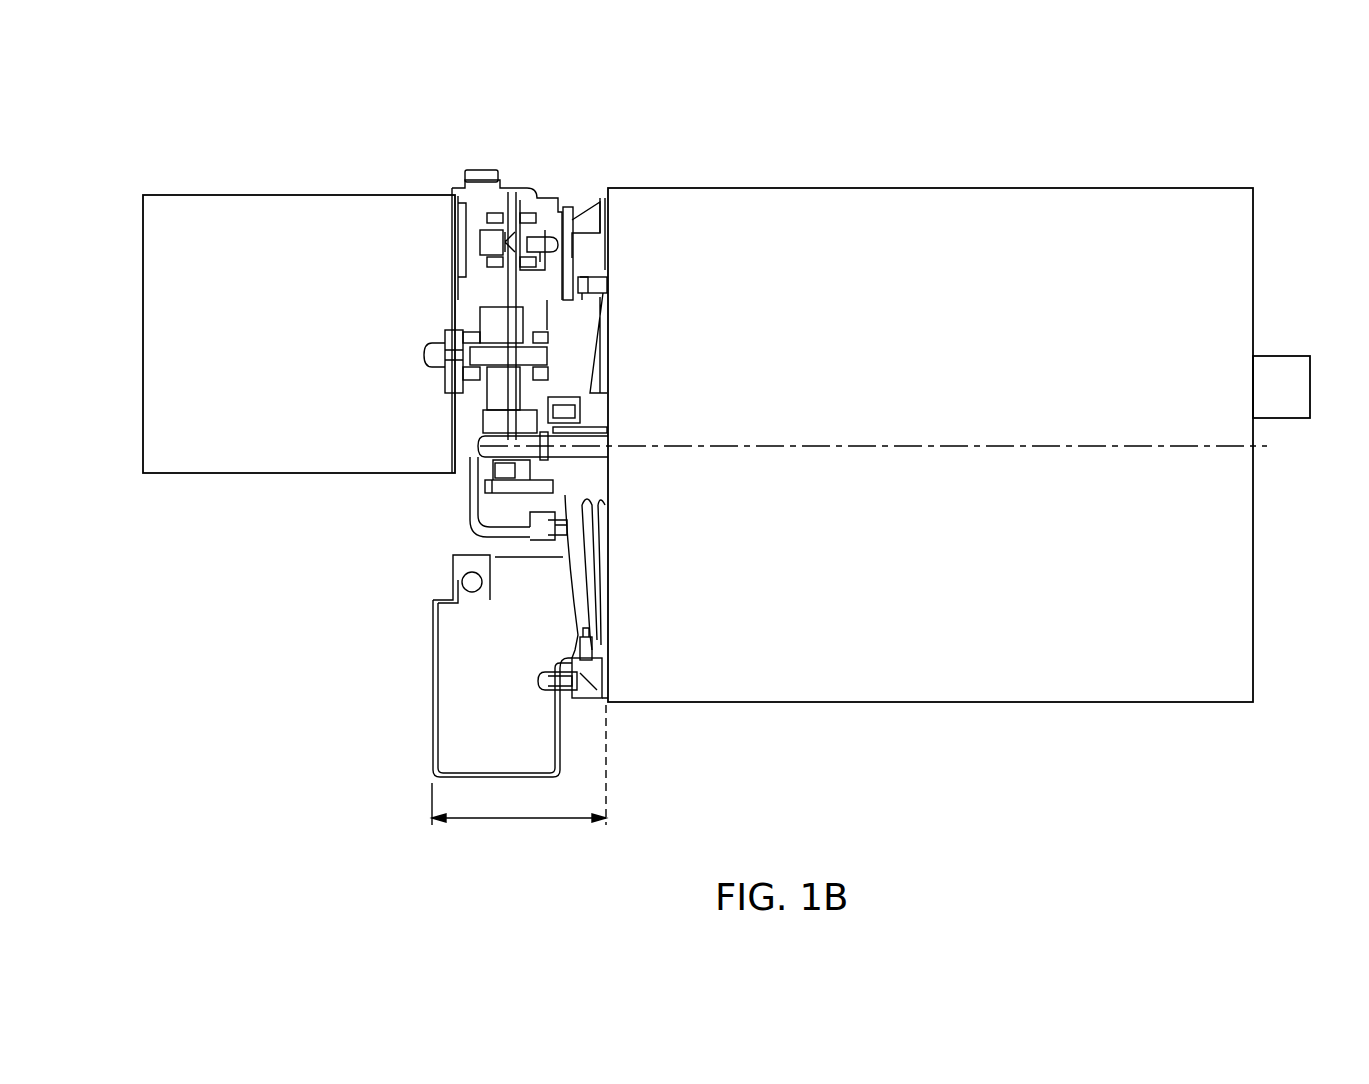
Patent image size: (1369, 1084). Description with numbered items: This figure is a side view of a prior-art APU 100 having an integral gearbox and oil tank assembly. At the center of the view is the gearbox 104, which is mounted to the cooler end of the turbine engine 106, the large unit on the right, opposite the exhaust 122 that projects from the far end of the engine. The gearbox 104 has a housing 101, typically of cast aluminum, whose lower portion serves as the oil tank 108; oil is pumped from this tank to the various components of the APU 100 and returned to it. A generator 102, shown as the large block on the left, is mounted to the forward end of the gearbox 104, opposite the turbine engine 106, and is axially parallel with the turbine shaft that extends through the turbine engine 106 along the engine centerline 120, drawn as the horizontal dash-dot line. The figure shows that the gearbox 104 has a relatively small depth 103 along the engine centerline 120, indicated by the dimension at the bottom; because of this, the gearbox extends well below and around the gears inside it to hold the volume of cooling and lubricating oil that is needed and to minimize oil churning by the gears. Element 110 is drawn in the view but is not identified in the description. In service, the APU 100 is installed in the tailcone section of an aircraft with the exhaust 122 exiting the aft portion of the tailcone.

The APU 100 is at (182, 136).
The housing 101 is at (558, 725).
The generator 102 is at (243, 462).
The depth 103 is at (520, 822).
The gearbox 104 is at (515, 178).
The turbine engine 106 is at (950, 200).
The oil tank 108 is at (432, 688).
The oil pipe 110 is at (525, 562).
The engine centerline 120 is at (1008, 452).
The exhaust 122 is at (1280, 362).